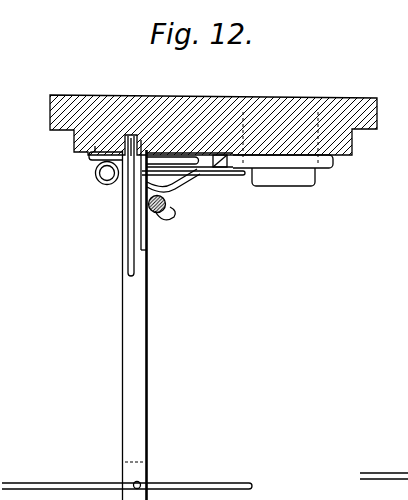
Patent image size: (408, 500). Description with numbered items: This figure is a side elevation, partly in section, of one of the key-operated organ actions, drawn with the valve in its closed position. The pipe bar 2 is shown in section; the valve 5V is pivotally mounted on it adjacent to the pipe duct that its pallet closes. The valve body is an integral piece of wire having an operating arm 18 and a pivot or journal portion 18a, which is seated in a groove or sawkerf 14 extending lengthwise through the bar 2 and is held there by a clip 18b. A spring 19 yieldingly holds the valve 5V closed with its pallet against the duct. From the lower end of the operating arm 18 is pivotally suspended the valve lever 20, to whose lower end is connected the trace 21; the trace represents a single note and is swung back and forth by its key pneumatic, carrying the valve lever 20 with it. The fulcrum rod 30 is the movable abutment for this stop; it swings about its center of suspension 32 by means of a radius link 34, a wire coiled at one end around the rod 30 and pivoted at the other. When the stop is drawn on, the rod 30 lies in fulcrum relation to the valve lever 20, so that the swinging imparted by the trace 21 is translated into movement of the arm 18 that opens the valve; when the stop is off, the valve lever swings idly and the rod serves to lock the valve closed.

The bar 2 is at (295, 124).
The valve 5V is at (330, 171).
The groove or sawkerf 14 is at (132, 147).
The operating arm 18 is at (131, 244).
The pivot or journal portion 18a is at (128, 136).
The clip 18b is at (88, 159).
The spring 19 is at (97, 177).
The valve lever 20 is at (128, 379).
The trace 21 is at (180, 483).
The fulcrum rod 30 is at (177, 211).
The center of swinging movement 32 is at (224, 169).
The radius link 34 is at (190, 185).